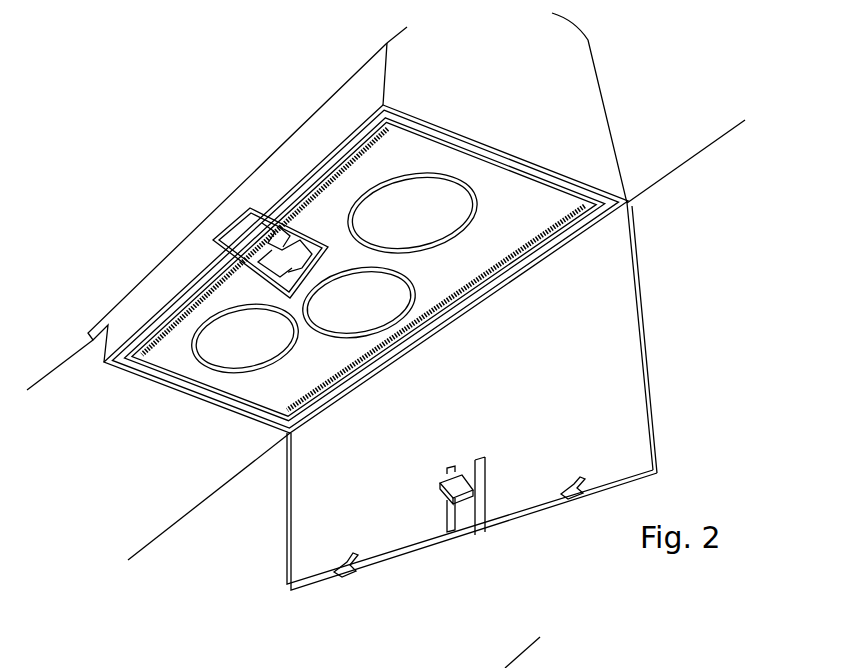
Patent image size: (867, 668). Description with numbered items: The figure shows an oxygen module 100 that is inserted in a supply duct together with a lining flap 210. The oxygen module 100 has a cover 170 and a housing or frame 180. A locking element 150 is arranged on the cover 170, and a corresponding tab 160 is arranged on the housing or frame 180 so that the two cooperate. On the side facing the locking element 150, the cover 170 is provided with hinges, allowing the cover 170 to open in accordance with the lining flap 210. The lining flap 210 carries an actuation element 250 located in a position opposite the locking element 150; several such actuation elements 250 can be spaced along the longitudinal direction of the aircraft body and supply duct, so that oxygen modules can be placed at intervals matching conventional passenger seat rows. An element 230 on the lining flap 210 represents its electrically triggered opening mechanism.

The oxygen module 100 is at (287, 185).
The locking element 150 is at (248, 238).
The tab 160 is at (213, 241).
The cover 170 is at (397, 155).
The housing or frame 180 is at (332, 138).
The lining flap 210 is at (312, 517).
The electrically triggered opening mechanism 230 is at (342, 575).
The actuation element 250 is at (470, 512).